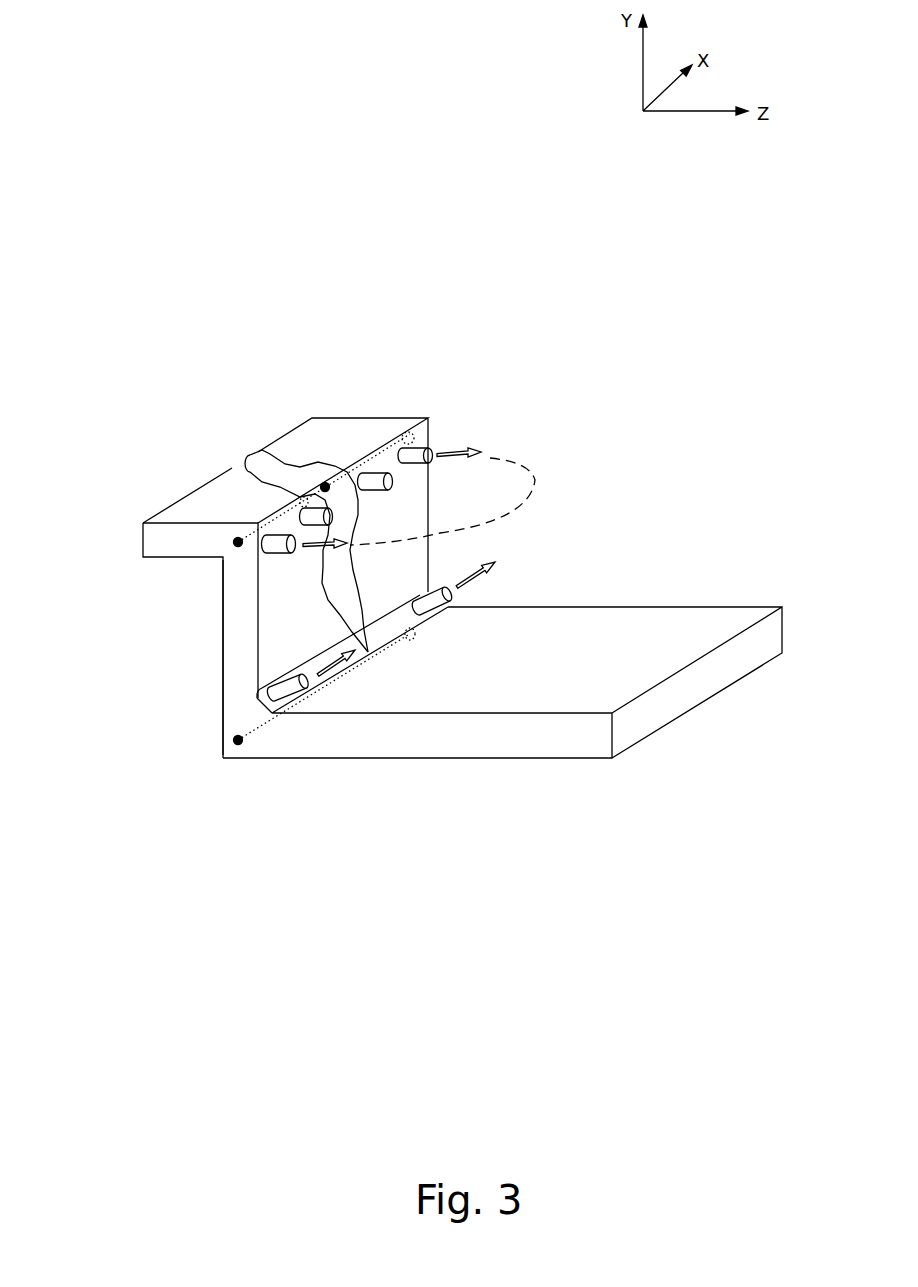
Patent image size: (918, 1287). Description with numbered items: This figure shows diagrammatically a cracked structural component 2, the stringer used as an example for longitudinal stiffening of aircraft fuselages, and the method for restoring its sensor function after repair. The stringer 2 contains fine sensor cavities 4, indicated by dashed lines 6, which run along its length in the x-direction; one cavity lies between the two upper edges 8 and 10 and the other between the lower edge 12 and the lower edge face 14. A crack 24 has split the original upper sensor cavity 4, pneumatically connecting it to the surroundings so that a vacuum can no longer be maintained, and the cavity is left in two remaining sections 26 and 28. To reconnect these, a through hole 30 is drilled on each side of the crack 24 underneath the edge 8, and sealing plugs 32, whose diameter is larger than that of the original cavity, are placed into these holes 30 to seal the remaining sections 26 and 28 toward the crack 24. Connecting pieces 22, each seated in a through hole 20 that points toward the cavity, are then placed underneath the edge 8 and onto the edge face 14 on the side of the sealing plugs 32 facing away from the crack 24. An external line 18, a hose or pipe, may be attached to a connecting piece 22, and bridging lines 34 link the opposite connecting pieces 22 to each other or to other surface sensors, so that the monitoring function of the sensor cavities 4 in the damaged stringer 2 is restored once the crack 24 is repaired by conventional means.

The structural component 2 is at (590, 388).
The sensor cavity 4 is at (238, 745).
The dashed lines 6 is at (252, 733).
The upper edge 8 is at (436, 412).
The upper edge 10 is at (213, 567).
The lower edge 12 is at (213, 763).
The lower edge face 14 is at (410, 625).
The external line 18 is at (323, 567).
The through hole 20 is at (278, 697).
The connecting piece 22 is at (282, 548).
The crack 24 is at (270, 470).
The remaining section 26 is at (262, 500).
The remaining section 28 is at (368, 433).
The through hole 30 is at (348, 455).
The sealing plug 32 is at (257, 467).
The bridging line 34 is at (535, 482).